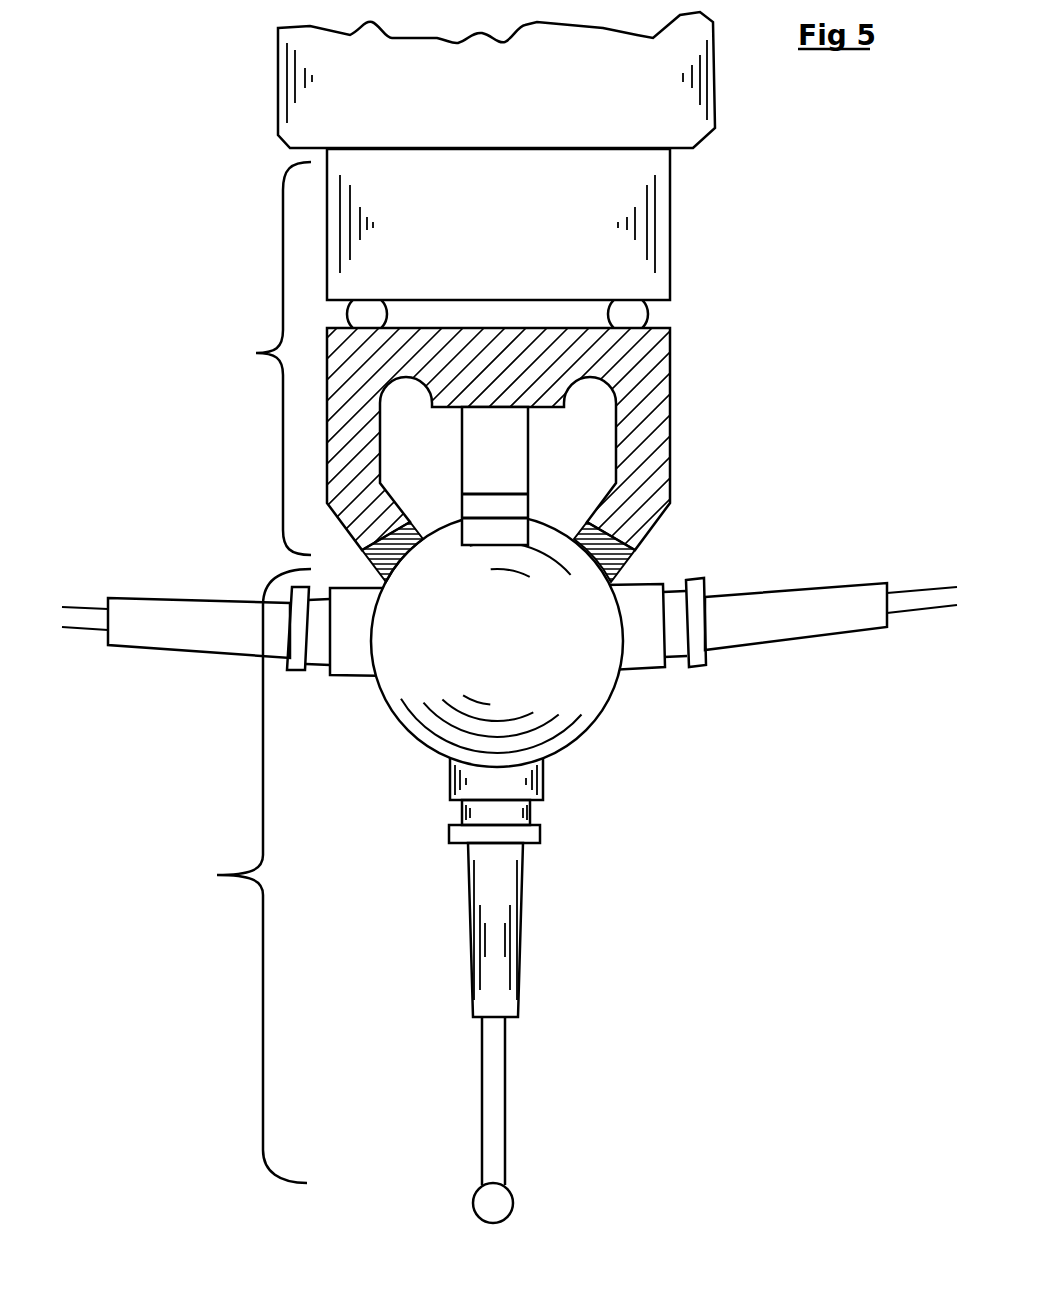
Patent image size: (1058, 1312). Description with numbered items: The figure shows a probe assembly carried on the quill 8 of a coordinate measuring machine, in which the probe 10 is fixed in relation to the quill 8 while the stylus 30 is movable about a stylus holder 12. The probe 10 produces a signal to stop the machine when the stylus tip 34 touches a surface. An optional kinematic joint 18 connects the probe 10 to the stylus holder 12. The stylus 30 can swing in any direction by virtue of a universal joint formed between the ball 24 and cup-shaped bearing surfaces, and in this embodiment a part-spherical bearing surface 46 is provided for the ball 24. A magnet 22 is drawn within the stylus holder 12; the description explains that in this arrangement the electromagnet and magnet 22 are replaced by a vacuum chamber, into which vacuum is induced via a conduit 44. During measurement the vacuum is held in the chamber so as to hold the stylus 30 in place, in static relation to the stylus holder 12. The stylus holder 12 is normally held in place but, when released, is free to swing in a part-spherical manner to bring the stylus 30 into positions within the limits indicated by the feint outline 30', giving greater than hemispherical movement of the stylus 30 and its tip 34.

The quill 8 is at (467, 132).
The probe 10 is at (440, 274).
The stylus holder 12 is at (256, 353).
The kinematic joint 18 is at (635, 312).
The conduit 44 is at (336, 409).
The magnet 22 is at (504, 456).
The part-spherical bearing surface 46 is at (418, 548).
The ball 24 is at (507, 674).
The stylus 30 is at (336, 877).
The feint outline 30' is at (227, 631).
The stylus tip 34 is at (498, 1203).